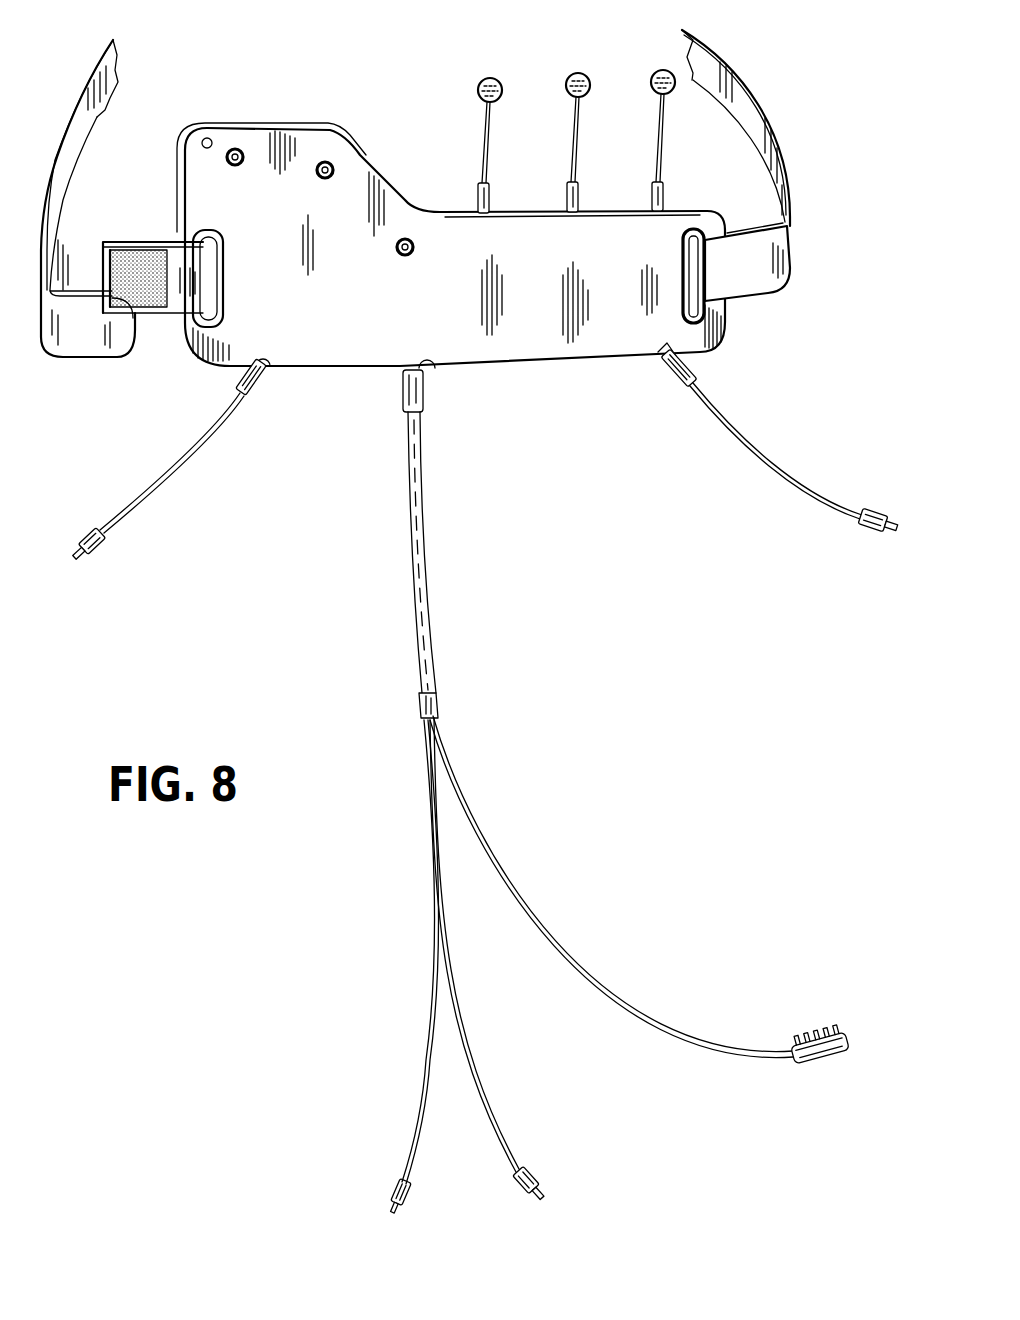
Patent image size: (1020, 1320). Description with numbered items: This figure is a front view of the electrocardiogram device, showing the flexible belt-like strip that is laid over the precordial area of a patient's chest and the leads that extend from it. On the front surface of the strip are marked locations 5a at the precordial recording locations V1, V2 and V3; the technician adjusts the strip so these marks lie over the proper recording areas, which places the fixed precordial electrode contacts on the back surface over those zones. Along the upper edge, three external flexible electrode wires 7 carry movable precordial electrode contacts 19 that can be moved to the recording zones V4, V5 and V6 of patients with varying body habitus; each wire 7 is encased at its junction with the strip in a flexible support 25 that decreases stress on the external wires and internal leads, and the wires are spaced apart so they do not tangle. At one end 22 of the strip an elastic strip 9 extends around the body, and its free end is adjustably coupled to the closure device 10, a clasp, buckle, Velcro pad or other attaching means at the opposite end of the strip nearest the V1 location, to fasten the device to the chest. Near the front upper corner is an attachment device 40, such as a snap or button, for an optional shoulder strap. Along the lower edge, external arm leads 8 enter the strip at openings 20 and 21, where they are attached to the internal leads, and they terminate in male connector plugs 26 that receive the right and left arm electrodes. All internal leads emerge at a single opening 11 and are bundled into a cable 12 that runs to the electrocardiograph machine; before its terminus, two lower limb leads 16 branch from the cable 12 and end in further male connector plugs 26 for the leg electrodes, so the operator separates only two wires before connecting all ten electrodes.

The elastic strip 9 is at (82, 72).
The attachment device 40 is at (207, 138).
The closure device 10 is at (137, 236).
The marked location 5a is at (312, 222).
The precordial recording location V1 is at (241, 174).
The precordial recording location V2 is at (331, 186).
The precordial recording location V3 is at (397, 253).
The movable precordial electrode contact 19 is at (568, 142).
The external flexible electrode wire 7 is at (483, 125).
The flexible support 25 is at (478, 195).
The precordial recording zone V4 is at (486, 165).
The precordial recording zone V5 is at (576, 163).
The precordial recording zone V6 is at (660, 161).
The end of the belt-like strip 22 is at (731, 305).
The opening 21 is at (662, 350).
The opening 20 is at (268, 368).
The opening 11 is at (430, 370).
The external arm lead 8 is at (193, 455).
The male connector plug 26 is at (103, 548).
The cable 12 is at (412, 578).
The lower limb lead 16 is at (424, 1092).